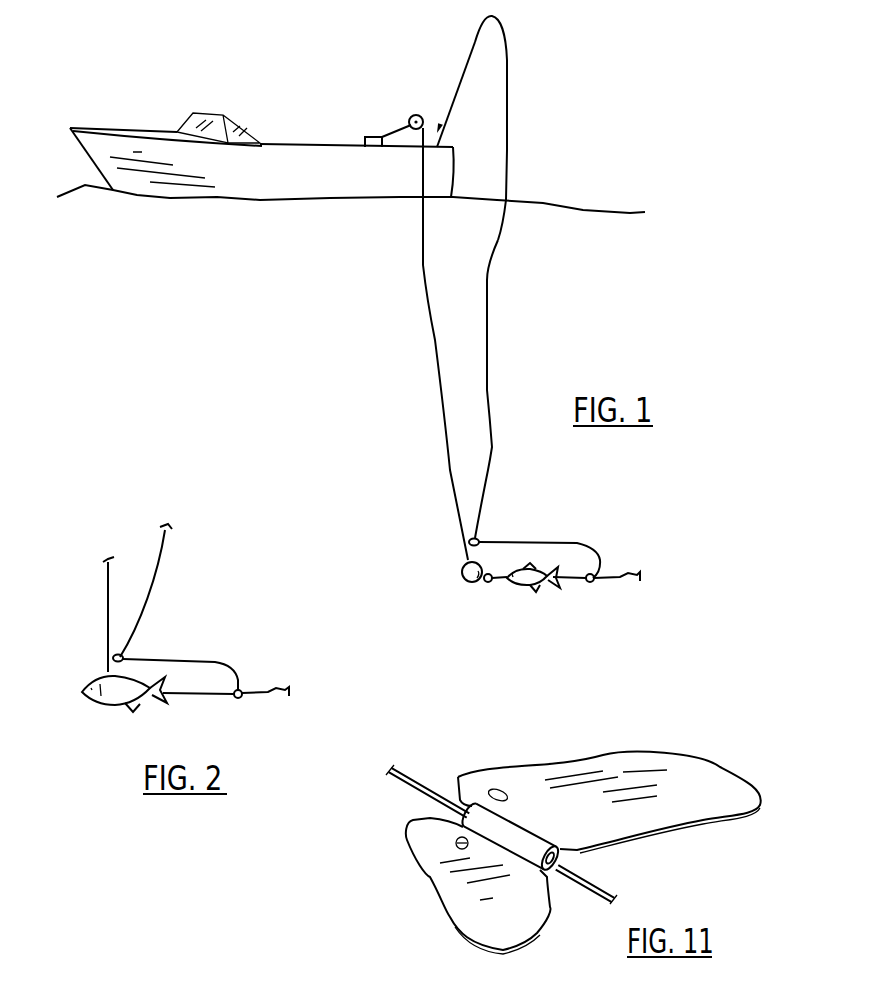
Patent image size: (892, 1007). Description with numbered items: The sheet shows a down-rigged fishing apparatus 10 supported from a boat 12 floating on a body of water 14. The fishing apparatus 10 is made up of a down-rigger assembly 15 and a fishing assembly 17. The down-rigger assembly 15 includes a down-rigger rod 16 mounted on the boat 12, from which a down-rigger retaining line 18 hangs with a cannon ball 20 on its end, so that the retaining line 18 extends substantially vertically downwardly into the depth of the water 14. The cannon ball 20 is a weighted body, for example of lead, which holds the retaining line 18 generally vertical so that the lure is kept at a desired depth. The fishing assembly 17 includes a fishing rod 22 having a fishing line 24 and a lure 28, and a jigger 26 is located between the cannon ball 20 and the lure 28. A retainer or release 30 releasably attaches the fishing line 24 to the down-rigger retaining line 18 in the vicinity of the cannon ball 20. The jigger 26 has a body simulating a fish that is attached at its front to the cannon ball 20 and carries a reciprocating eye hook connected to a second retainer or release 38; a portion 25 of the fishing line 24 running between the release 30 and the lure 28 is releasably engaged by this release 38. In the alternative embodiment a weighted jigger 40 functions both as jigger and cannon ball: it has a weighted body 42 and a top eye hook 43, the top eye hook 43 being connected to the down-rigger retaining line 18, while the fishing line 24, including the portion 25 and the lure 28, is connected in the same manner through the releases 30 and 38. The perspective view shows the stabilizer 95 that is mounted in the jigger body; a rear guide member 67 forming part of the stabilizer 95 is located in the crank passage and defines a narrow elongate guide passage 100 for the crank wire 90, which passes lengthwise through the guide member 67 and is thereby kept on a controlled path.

In FIG. 1, the fishing apparatus 10 is at (535, 162).
In FIG. 1, the boat 12 is at (73, 148).
In FIG. 1, the body of water 14 is at (257, 257).
In FIG. 1, the down-rigger assembly 15 is at (418, 111).
In FIG. 1, the down-rigger rod 16 is at (398, 120).
In FIG. 1, the fishing assembly 17 is at (513, 42).
In FIG. 1, the down-rigger retaining line 18 is at (421, 270).
In FIG. 2, the down-rigger retaining line 18 is at (105, 568).
In FIG. 1, the cannon ball 20 is at (462, 578).
In FIG. 1, the fishing rod 22 is at (467, 44).
In FIG. 1, the fishing line 24 is at (490, 278).
In FIG. 2, the fishing line 24 is at (160, 568).
In FIG. 1, the portion of fishing line 25 is at (563, 541).
In FIG. 2, the portion of fishing line 25 is at (223, 667).
In FIG. 1, the jigger 26 is at (515, 585).
In FIG. 1, the lure 28 is at (635, 572).
In FIG. 2, the lure 28 is at (283, 688).
In FIG. 1, the retainer or release 30 is at (467, 540).
In FIG. 1, the retainer or release 38 is at (592, 583).
In FIG. 2, the retainer or release 38 is at (238, 702).
In FIG. 2, the weighted jigger 40 is at (85, 683).
In FIG. 2, the weighted body 42 is at (133, 695).
In FIG. 2, the top eye hook 43 is at (108, 672).
In FIG. 11, the rear guide member 67 is at (467, 817).
In FIG. 11, the crank wire 90 is at (425, 782).
In FIG. 11, the stabilizer 95 is at (690, 805).
In FIG. 11, the guide passage 100 is at (553, 868).